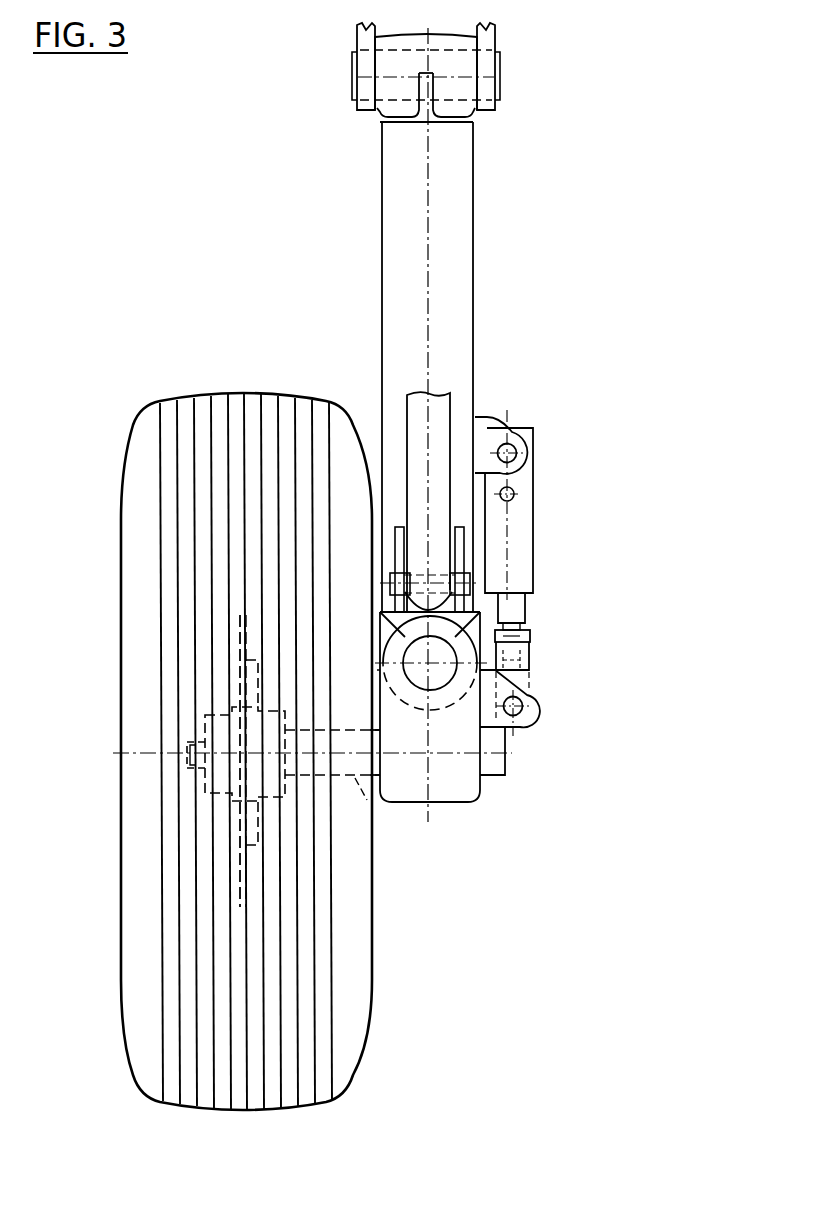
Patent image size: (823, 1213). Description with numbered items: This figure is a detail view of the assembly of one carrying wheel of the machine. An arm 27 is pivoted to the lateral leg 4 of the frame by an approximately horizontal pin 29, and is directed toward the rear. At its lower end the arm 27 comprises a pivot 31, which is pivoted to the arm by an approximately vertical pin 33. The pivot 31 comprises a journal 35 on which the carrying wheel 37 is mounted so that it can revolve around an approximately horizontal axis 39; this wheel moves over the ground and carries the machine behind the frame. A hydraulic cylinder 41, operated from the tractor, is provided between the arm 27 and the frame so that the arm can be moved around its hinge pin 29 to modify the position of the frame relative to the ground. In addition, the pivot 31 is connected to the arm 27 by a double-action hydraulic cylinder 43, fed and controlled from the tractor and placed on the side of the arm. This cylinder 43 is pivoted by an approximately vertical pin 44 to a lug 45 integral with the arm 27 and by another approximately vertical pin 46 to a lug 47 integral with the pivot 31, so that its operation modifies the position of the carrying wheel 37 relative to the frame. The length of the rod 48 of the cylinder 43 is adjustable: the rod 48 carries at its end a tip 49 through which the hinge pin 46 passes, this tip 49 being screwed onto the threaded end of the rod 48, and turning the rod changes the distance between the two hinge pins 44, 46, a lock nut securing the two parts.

The lateral leg 4 is at (360, 105).
The approximately horizontal pin 29 is at (500, 85).
The arm 27 is at (460, 200).
The hydraulic cylinder 41 is at (443, 413).
The lug 45 is at (492, 428).
The approximately vertical pin 44 is at (517, 445).
The double-action hydraulic cylinder 43 is at (525, 503).
The rod 48 is at (517, 603).
The tip 49 is at (528, 662).
The approximately vertical pin 46 is at (530, 695).
The lug 47 is at (528, 713).
The approximately vertical pin 33 is at (440, 678).
The pivot 31 is at (463, 775).
The journal 35 is at (370, 805).
The approximately horizontal axis 39 is at (135, 753).
The carrying wheel 37 is at (357, 910).